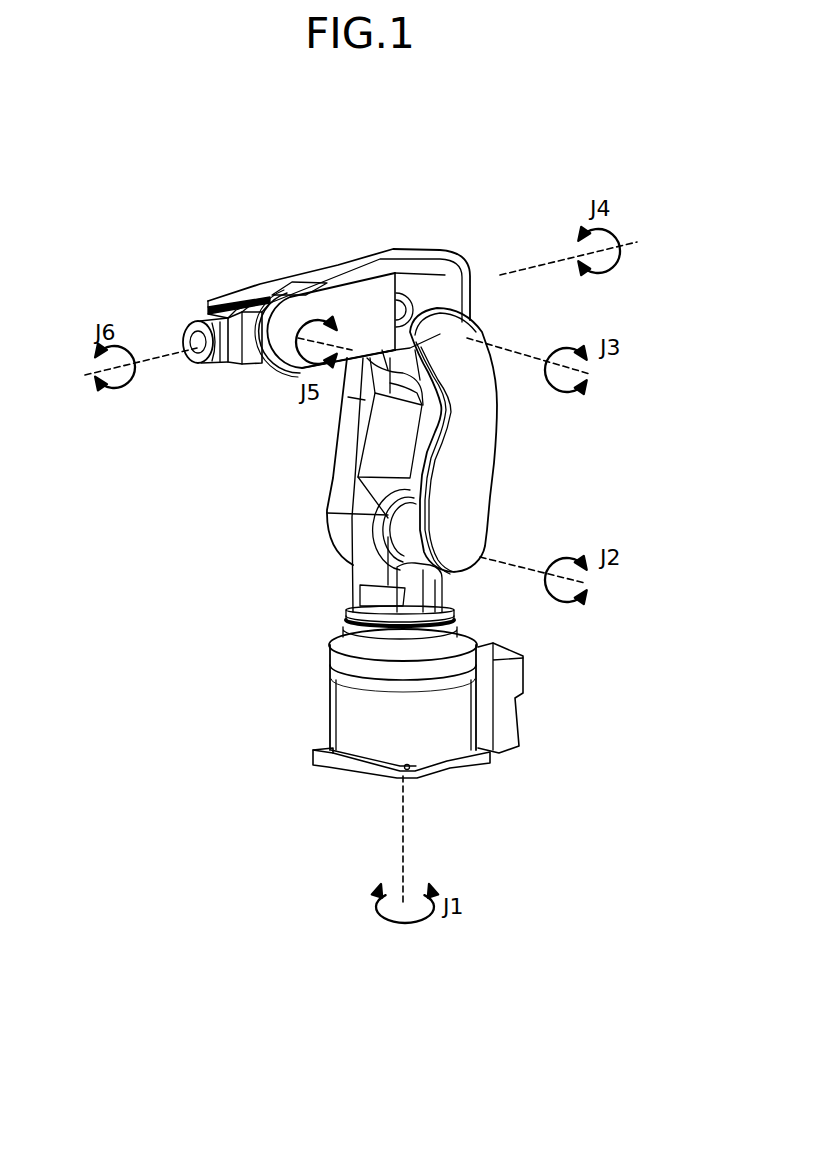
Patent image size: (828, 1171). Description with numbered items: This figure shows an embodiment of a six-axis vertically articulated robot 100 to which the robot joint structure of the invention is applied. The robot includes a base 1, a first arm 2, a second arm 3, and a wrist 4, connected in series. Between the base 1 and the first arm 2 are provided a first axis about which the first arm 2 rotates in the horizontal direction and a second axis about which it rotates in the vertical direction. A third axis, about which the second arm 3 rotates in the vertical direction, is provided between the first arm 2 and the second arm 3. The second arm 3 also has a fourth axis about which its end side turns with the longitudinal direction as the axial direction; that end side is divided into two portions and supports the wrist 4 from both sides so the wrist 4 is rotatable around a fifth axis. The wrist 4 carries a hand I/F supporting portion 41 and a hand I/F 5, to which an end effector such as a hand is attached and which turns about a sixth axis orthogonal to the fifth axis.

The vertically articulated robot 100 is at (443, 189).
The base 1 is at (440, 758).
The first arm 2 is at (477, 467).
The second arm 3 is at (355, 312).
The wrist 4 is at (268, 299).
The hand I/F supporting portion 41 is at (232, 312).
The hand interface (hand I/F) 5 is at (195, 338).